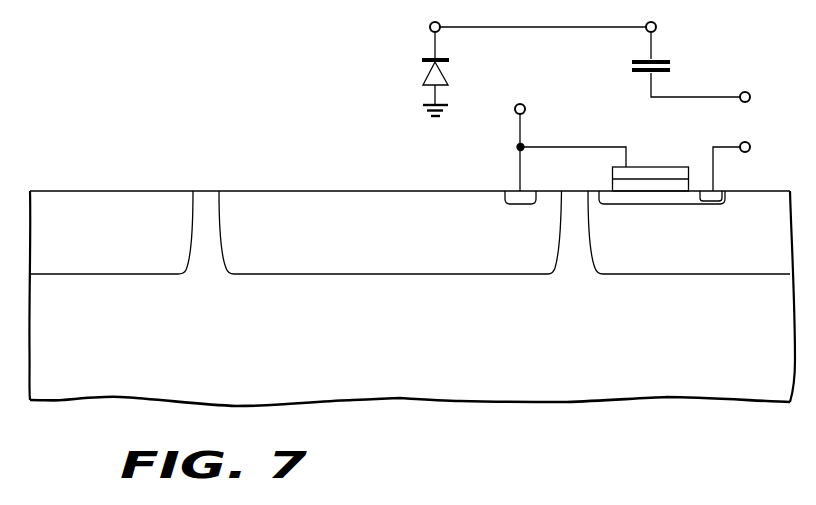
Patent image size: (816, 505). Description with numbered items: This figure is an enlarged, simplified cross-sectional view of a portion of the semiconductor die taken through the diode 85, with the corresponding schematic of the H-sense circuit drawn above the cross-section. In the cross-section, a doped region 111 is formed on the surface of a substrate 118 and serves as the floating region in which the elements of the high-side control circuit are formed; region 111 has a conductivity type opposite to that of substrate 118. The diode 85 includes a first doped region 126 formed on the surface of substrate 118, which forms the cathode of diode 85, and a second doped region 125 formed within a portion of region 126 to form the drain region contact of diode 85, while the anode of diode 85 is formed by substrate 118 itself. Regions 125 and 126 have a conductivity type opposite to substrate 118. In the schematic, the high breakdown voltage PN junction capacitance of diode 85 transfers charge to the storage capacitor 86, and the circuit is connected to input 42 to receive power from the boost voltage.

The input 42 is at (751, 97).
The diode 85 is at (423, 66).
The capacitor 86 is at (665, 53).
The doped region 111 is at (127, 244).
The substrate 118 is at (436, 342).
The second doped region 125 is at (521, 200).
The first doped region 126 is at (411, 243).